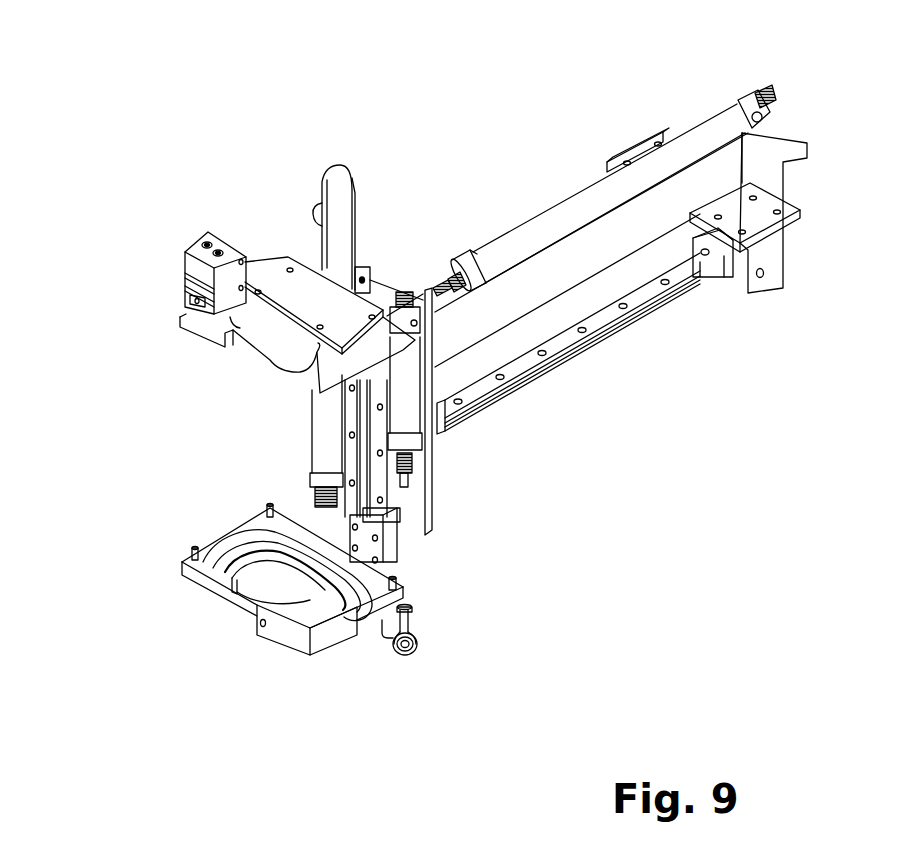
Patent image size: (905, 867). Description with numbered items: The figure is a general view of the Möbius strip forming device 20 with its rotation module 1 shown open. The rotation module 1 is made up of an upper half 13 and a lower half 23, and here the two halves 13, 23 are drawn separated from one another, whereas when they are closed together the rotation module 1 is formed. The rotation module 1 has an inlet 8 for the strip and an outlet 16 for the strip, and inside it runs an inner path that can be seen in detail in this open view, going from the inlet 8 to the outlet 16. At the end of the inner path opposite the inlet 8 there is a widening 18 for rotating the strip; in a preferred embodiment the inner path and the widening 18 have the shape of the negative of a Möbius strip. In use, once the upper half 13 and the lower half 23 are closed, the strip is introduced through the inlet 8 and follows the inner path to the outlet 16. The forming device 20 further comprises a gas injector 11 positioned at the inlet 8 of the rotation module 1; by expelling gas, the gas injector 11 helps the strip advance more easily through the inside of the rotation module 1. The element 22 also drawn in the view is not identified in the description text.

The rotation module 1 is at (335, 623).
The inlet 8 is at (305, 655).
The gas injector 11 is at (266, 630).
The upper half 13 is at (263, 267).
The outlet 16 is at (223, 597).
The widening 18 is at (403, 598).
The Möbius strip forming device 20 is at (580, 207).
The gripper block 22 is at (198, 260).
The lower half 23 is at (183, 558).